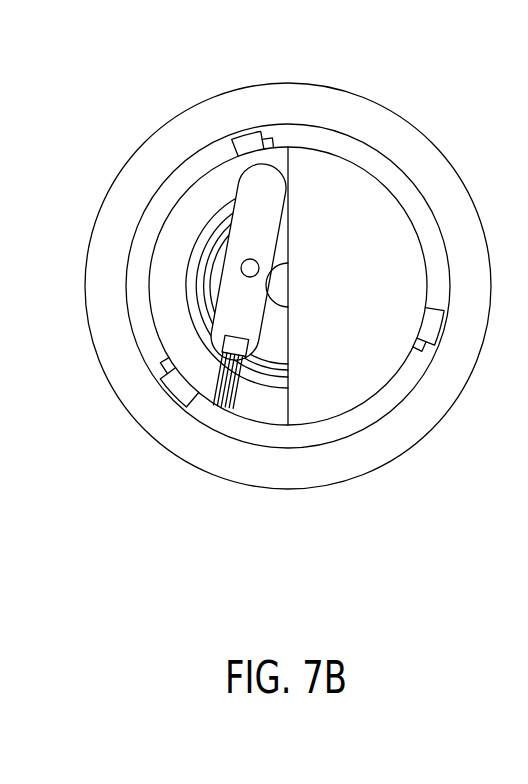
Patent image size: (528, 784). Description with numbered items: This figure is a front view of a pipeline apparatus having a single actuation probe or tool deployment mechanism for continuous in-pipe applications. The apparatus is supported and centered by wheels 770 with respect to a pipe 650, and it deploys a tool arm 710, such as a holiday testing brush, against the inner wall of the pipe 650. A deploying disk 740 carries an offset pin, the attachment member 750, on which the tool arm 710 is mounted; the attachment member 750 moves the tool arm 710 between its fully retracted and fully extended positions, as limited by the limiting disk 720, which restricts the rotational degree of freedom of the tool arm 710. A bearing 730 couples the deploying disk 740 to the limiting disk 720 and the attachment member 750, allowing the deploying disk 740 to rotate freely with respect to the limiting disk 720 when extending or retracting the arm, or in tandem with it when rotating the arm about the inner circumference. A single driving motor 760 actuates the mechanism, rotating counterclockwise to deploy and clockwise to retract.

The pipe 650 is at (362, 457).
The limiting disk 720 is at (355, 183).
The wheels 770 is at (247, 137).
The bearing 730 is at (207, 340).
The tool arm 710 is at (245, 298).
The deploying disk 740 is at (272, 350).
The attachment member 750 is at (250, 268).
The driving motor 760 is at (279, 286).